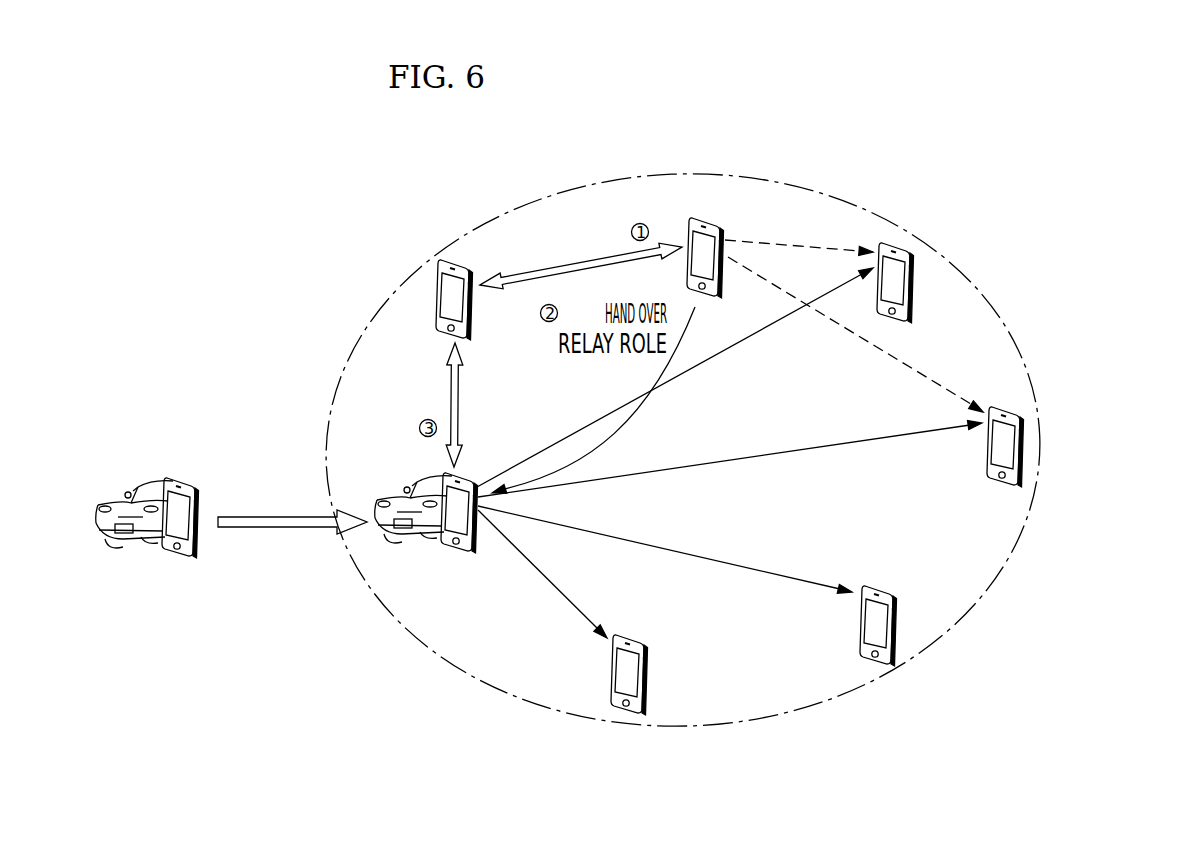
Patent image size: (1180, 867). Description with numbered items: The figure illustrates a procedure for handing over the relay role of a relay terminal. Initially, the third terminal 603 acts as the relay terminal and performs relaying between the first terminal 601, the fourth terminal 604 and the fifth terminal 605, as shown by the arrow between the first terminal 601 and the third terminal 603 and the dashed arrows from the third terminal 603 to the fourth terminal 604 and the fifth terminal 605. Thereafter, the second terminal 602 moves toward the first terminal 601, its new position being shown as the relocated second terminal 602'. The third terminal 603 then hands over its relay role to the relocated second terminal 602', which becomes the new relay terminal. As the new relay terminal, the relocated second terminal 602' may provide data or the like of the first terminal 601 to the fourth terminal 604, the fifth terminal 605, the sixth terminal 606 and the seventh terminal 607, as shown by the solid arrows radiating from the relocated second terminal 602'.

The terminal 1 601 is at (438, 280).
The terminal 2 602 is at (164, 459).
The terminal 2 (after approaching terminal 1) 602' is at (454, 553).
The terminal 3 603 is at (710, 227).
The terminal 4 604 is at (912, 250).
The terminal 5 605 is at (1017, 485).
The terminal 6 606 is at (888, 667).
The terminal 7 607 is at (637, 713).